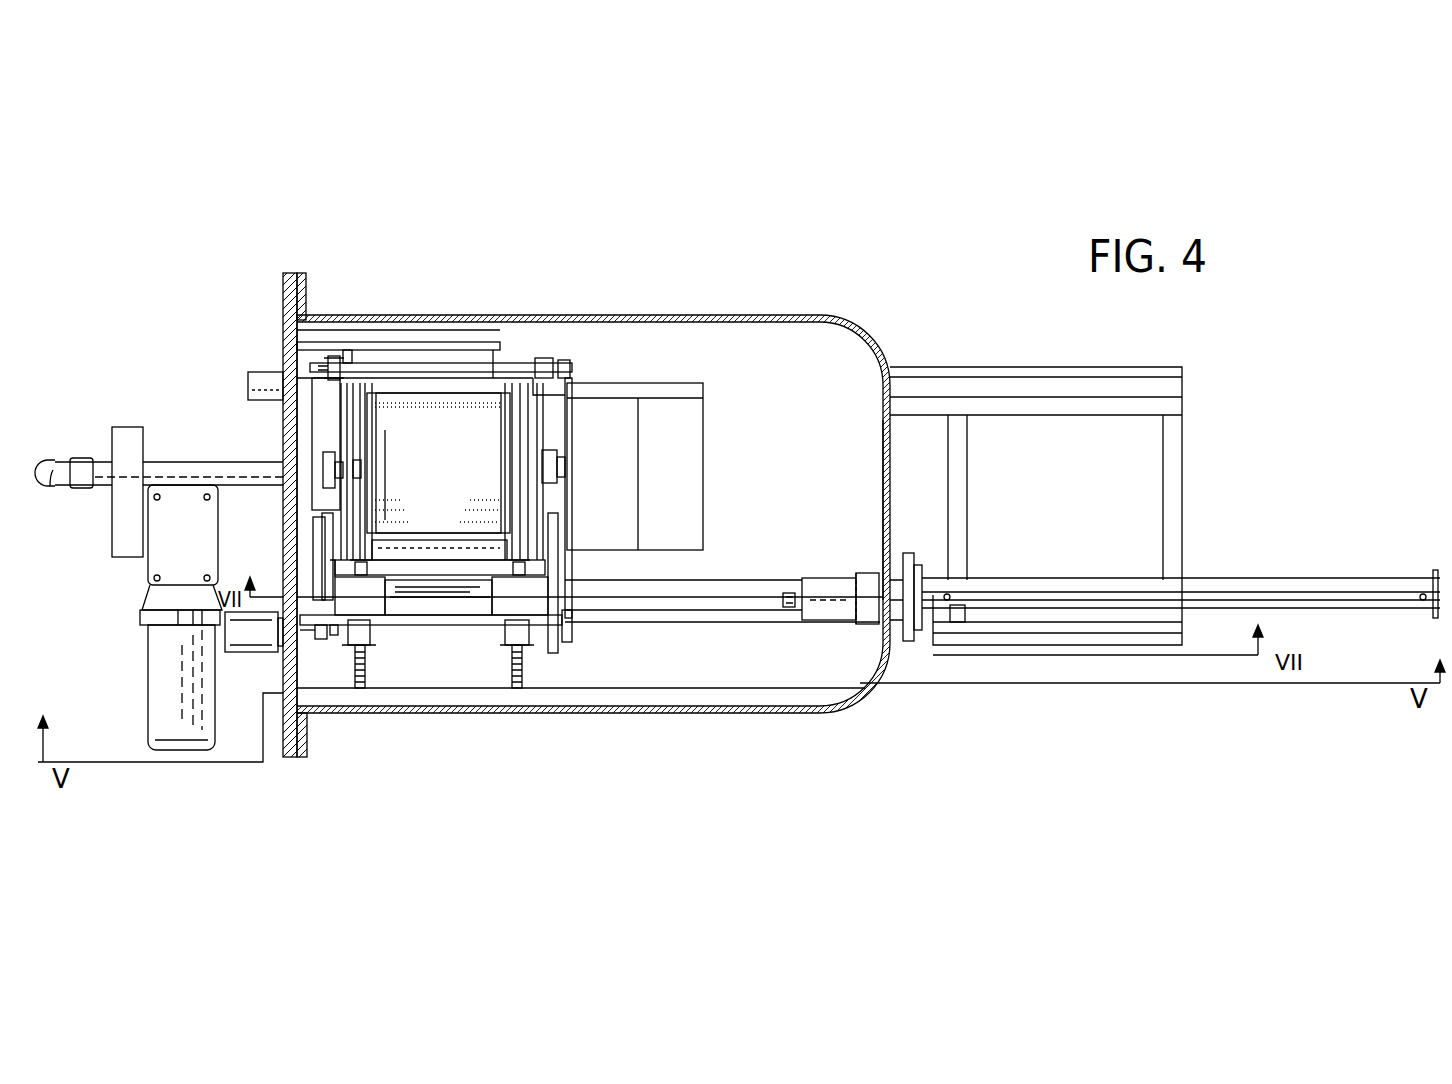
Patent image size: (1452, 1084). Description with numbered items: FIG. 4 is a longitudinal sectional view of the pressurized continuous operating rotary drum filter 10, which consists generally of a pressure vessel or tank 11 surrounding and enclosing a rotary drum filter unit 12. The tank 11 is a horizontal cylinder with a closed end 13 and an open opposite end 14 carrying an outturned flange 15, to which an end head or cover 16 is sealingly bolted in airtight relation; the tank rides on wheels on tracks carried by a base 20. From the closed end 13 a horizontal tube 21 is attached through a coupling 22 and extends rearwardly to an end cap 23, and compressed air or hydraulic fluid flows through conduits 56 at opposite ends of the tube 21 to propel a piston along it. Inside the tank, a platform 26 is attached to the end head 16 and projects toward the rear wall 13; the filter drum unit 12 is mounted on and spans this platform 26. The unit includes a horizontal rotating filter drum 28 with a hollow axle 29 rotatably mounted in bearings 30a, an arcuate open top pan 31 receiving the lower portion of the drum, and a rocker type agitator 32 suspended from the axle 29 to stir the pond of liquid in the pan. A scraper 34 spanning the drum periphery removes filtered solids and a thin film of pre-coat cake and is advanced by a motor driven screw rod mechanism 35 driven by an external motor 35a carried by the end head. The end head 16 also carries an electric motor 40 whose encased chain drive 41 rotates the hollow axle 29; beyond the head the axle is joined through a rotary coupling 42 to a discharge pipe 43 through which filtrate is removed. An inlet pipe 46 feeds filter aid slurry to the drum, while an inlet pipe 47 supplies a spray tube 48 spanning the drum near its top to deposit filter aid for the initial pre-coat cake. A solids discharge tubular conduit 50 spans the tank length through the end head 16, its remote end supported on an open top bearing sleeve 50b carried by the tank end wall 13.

The pressurized continuous operating rotary drum filter 10 is at (685, 315).
The pressure vessel or tank 11 is at (558, 315).
The rotary drum filter unit 12 is at (460, 428).
The closed end 13 is at (877, 368).
The open opposite end 14 is at (302, 332).
The outturned flange 15 is at (305, 288).
The end head or cover 16 is at (287, 290).
The base 20 is at (1175, 460).
The horizontal tube 21 is at (1358, 598).
The coupling 22 is at (908, 555).
The end cap 23 is at (1435, 572).
The platform 26 is at (690, 466).
The filter drum 28 is at (372, 400).
The axle 29 is at (370, 472).
The bearings 30a is at (325, 466).
The arcuate open top pan 31 is at (538, 395).
The rocker type agitator 32 is at (507, 430).
The scraper 34 is at (430, 548).
The motor driven screw rod mechanism 35 is at (366, 672).
The external motor 35a is at (250, 648).
The electric motor 40 is at (160, 670).
The encased chain drive 41 is at (135, 448).
The rotary coupling 42 is at (82, 465).
The discharge pipe 43 is at (52, 486).
The inlet pipe 46 is at (452, 342).
The inlet pipe 47 is at (357, 352).
The spray tube 48 is at (482, 374).
The solids discharge tubular conduit 50 is at (825, 578).
The open top bearing sleeve 50b is at (866, 573).
The conduits 56 is at (950, 595).